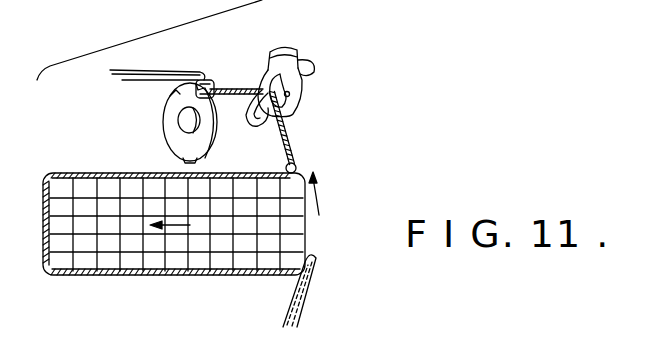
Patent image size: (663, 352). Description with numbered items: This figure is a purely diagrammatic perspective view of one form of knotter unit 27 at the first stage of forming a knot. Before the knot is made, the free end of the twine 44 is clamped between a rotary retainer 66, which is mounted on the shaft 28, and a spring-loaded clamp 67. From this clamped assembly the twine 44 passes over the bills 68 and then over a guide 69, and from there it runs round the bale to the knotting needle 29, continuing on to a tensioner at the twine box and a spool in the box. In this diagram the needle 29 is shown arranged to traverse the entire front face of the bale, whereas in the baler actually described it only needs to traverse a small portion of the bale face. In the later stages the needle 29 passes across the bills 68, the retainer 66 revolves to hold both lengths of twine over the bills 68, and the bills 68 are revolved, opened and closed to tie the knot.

The knotter unit 27 is at (164, 31).
The shaft 28 is at (182, 122).
The knotting needle 29 is at (297, 328).
The twine 44 is at (112, 175).
The rotary retainer 66 is at (172, 102).
The spring-loaded clamp 67 is at (200, 83).
The bills 68 is at (302, 83).
The guide 69 is at (295, 167).